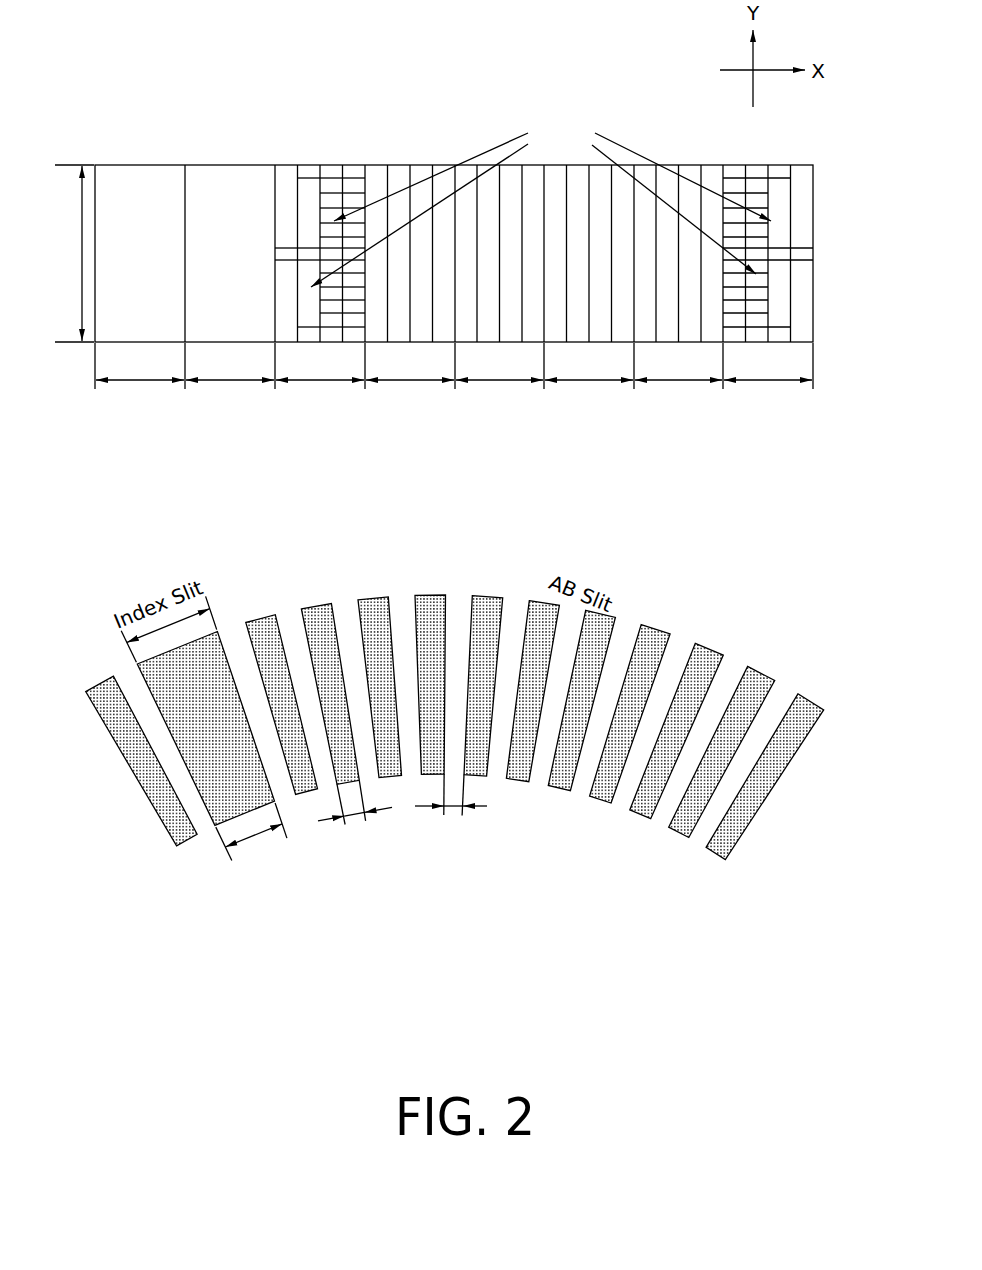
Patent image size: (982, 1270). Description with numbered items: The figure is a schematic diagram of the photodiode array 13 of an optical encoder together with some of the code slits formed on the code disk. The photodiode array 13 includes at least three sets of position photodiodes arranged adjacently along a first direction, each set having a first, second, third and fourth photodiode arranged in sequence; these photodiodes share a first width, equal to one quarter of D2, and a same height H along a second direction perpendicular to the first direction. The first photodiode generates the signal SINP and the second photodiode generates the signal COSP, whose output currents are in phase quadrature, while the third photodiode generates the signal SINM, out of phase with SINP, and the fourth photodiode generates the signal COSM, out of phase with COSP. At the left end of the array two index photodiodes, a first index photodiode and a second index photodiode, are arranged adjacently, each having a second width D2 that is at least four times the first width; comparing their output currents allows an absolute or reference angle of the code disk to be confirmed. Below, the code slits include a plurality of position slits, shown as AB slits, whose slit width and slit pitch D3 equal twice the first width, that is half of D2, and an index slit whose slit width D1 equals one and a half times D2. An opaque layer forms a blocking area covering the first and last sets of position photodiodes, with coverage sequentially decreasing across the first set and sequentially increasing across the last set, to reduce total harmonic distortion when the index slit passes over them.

The photodiode array 13 is at (106, 84).
The signal SINP is at (286, 164).
The signal COSP is at (308, 164).
The signal SINM is at (333, 164).
The signal COSM is at (356, 164).
The height H is at (74, 253).
The slit width of the index slit D1 is at (251, 837).
The second width D2 is at (454, 366).
The slit pitch of the position slits D3 is at (402, 808).